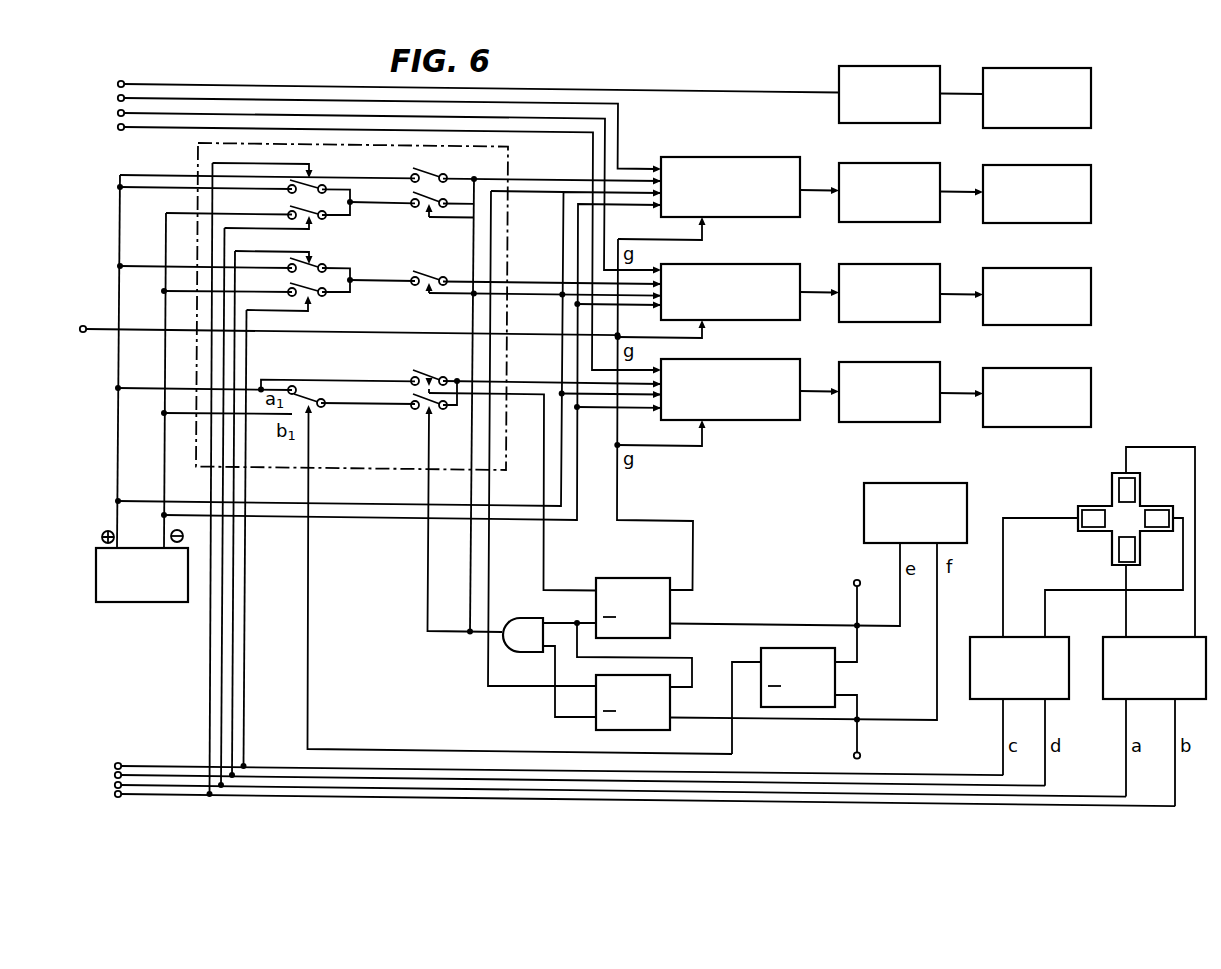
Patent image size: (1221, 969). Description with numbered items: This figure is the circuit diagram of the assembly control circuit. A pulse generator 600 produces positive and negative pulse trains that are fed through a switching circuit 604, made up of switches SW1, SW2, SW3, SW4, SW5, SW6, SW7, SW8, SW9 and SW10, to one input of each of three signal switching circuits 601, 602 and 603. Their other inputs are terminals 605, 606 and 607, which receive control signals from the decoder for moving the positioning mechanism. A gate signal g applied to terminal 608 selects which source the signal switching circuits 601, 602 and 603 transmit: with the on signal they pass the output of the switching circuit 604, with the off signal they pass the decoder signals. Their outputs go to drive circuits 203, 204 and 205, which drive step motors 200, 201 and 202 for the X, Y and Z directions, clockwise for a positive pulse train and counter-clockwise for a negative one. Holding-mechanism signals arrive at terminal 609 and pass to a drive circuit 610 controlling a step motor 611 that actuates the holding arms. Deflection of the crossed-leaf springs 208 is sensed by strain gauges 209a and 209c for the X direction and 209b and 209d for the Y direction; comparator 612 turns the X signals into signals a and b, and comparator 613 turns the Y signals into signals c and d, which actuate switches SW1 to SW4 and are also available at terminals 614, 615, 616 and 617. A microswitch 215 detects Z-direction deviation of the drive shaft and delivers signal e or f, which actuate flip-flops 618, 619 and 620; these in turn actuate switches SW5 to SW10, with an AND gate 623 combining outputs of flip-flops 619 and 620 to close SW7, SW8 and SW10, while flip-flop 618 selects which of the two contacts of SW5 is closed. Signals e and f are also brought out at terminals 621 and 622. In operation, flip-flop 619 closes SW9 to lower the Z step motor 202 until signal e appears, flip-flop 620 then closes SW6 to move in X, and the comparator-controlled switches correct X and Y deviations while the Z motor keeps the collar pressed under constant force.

The pulse generator 600 is at (142, 603).
The signal switching circuit 601 is at (705, 157).
The signal switching circuit 602 is at (750, 264).
The signal switching circuit 603 is at (750, 359).
The switching circuit 604 is at (418, 472).
The input terminal 605 is at (118, 98).
The input terminal 606 is at (118, 113).
The input terminal 607 is at (118, 128).
The terminal 608 is at (82, 326).
The terminal 609 is at (118, 84).
The drive circuit 610 is at (873, 66).
The step motor 611 is at (1020, 68).
The comparator 612 is at (1115, 637).
The comparator 613 is at (996, 637).
The terminal 614 is at (120, 764).
The terminal 615 is at (115, 773).
The terminal 616 is at (115, 784).
The terminal 617 is at (115, 794).
The flip-flop 618 is at (768, 648).
The flip-flop 619 is at (628, 578).
The flip-flop 620 is at (598, 731).
The terminal 621 is at (857, 581).
The terminal 622 is at (861, 757).
The AND gate 623 is at (541, 617).
The step motor 200 is at (1022, 165).
The step motor 201 is at (1022, 268).
The step motor 202 is at (1022, 368).
The drive circuit 203 is at (877, 163).
The drive circuit 204 is at (880, 264).
The drive circuit 205 is at (880, 362).
The crossed-leaf springs 208 is at (1140, 476).
The strain gauge 209a is at (1120, 480).
The strain gauge 209b is at (1165, 530).
The strain gauge 209c is at (1120, 550).
The strain gauge 209d is at (1085, 510).
The microswitch 215 is at (898, 483).
The switch SW1 is at (313, 179).
The switch SW2 is at (317, 216).
The switch SW3 is at (333, 257).
The switch SW4 is at (315, 297).
The switch SW5 is at (299, 392).
The switch SW6 is at (433, 170).
The switch SW7 is at (420, 212).
The switch SW8 is at (430, 277).
The switch SW9 is at (428, 373).
The switch SW10 is at (416, 410).